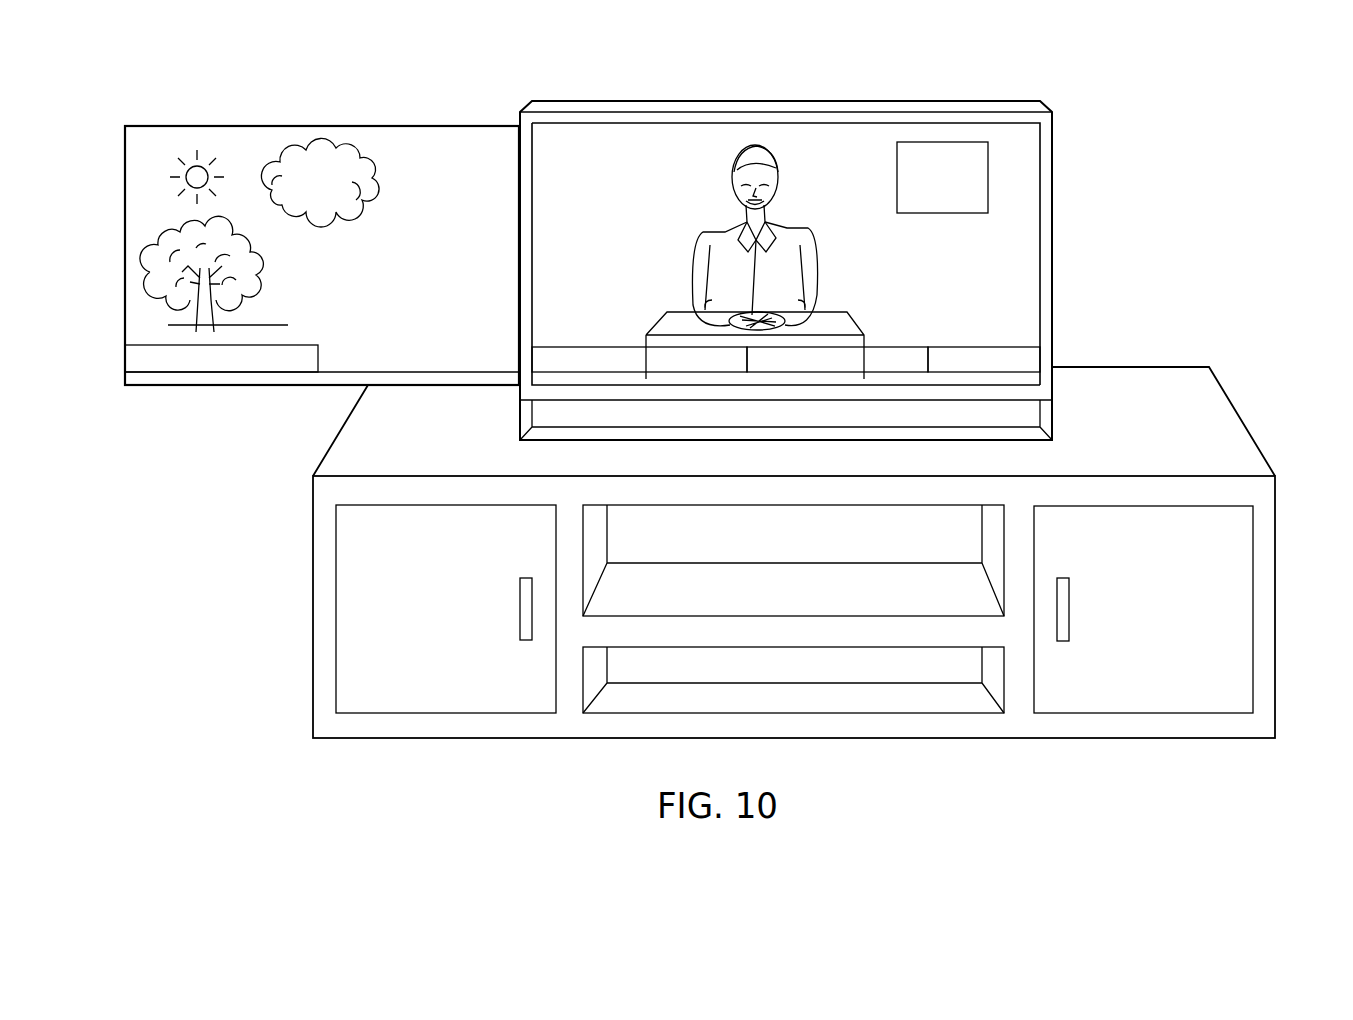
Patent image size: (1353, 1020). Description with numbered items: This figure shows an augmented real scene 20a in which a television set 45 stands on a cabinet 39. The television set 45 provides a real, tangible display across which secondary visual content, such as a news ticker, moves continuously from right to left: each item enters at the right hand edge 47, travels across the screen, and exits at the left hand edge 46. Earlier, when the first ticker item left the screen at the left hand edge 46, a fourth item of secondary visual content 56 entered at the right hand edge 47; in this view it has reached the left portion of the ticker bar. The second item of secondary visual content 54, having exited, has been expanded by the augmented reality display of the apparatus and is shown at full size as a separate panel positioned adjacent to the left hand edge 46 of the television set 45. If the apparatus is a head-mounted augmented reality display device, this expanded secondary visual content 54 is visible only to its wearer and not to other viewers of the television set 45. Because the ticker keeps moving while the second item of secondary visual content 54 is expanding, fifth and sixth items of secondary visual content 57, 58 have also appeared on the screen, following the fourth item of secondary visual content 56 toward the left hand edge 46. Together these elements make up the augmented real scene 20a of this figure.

The second item of secondary visual content 54 is at (138, 143).
The television set 45 is at (567, 142).
The left hand edge 46 is at (531, 243).
The right hand edge 47 is at (1040, 145).
The fourth item of secondary visual content 56 is at (605, 345).
The fifth item of secondary visual content 57 is at (906, 345).
The sixth item of secondary visual content 58 is at (988, 345).
The cabinet 39 is at (1222, 426).
The augmented real scene 20a is at (293, 576).